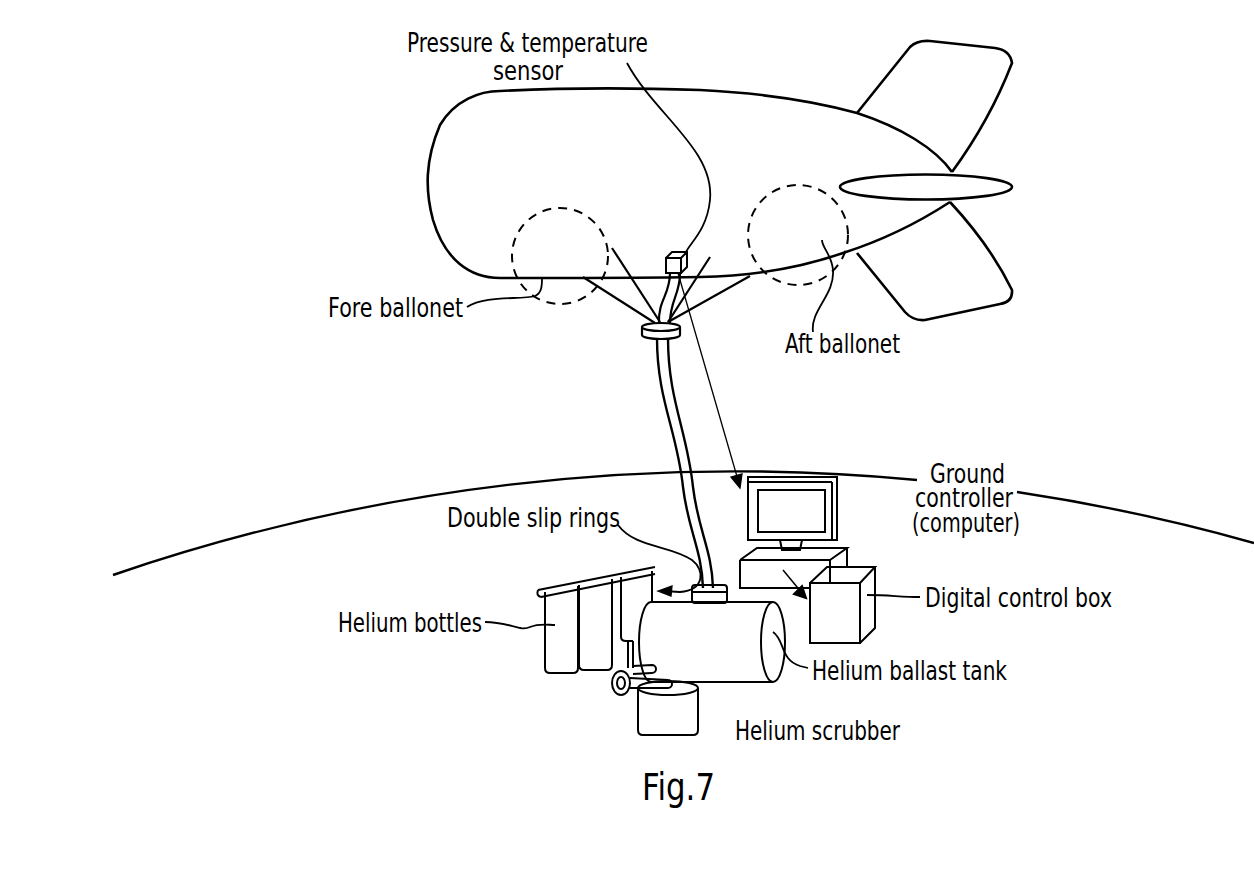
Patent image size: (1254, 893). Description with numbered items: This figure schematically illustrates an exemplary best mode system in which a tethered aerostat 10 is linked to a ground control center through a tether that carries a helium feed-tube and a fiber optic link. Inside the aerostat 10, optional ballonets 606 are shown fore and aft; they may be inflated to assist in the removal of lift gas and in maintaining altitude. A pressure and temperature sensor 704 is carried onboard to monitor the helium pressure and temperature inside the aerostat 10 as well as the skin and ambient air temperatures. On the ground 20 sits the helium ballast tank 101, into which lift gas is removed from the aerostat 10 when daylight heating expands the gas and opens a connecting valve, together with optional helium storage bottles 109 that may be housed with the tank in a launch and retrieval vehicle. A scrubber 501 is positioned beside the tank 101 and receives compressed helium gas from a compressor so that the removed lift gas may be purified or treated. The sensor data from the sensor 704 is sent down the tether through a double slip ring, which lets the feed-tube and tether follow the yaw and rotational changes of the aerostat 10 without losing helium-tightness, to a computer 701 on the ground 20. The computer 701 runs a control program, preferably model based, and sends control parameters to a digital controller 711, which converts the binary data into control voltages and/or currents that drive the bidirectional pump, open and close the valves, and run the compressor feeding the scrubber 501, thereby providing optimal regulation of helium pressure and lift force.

The tethered aerostat 10 is at (756, 159).
The pressure and temperature sensor 704 is at (677, 250).
The ballonets 606 is at (565, 258).
The computer 701 is at (845, 548).
The digital controller 711 is at (870, 617).
The helium ballast tank 101 is at (726, 644).
The helium storage bottles 109 is at (560, 660).
The scrubber 501 is at (653, 713).
The ground 20 is at (1084, 721).